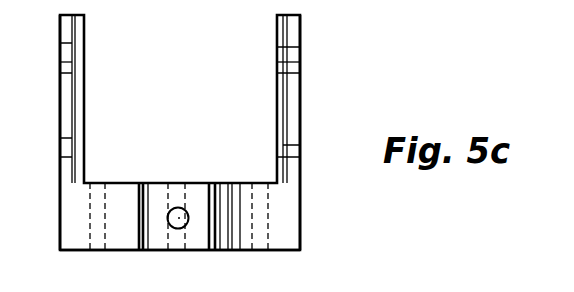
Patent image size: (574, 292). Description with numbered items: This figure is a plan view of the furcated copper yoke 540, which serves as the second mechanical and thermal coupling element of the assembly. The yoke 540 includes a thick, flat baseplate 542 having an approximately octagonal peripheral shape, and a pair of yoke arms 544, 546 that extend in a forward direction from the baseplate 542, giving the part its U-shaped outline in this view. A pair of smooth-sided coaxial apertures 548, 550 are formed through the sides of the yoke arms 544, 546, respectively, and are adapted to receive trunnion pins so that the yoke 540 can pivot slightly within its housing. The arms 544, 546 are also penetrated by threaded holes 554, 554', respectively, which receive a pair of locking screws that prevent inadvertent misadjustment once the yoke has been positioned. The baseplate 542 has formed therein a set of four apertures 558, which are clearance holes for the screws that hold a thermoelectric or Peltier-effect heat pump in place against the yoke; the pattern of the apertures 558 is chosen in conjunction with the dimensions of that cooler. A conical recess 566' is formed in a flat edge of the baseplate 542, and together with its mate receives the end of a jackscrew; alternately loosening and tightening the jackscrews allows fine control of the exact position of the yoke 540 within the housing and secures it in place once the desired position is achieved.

The furcated copper yoke 540 is at (357, 243).
The baseplate 542 is at (294, 250).
The yoke arm 544 is at (61, 28).
The yoke arm 546 is at (301, 24).
The aperture 548 is at (60, 62).
The aperture 550 is at (300, 62).
The threaded hole 554 is at (43, 143).
The threaded hole 554' is at (319, 143).
The aperture 558 is at (98, 183).
The conical recess 566' is at (166, 184).